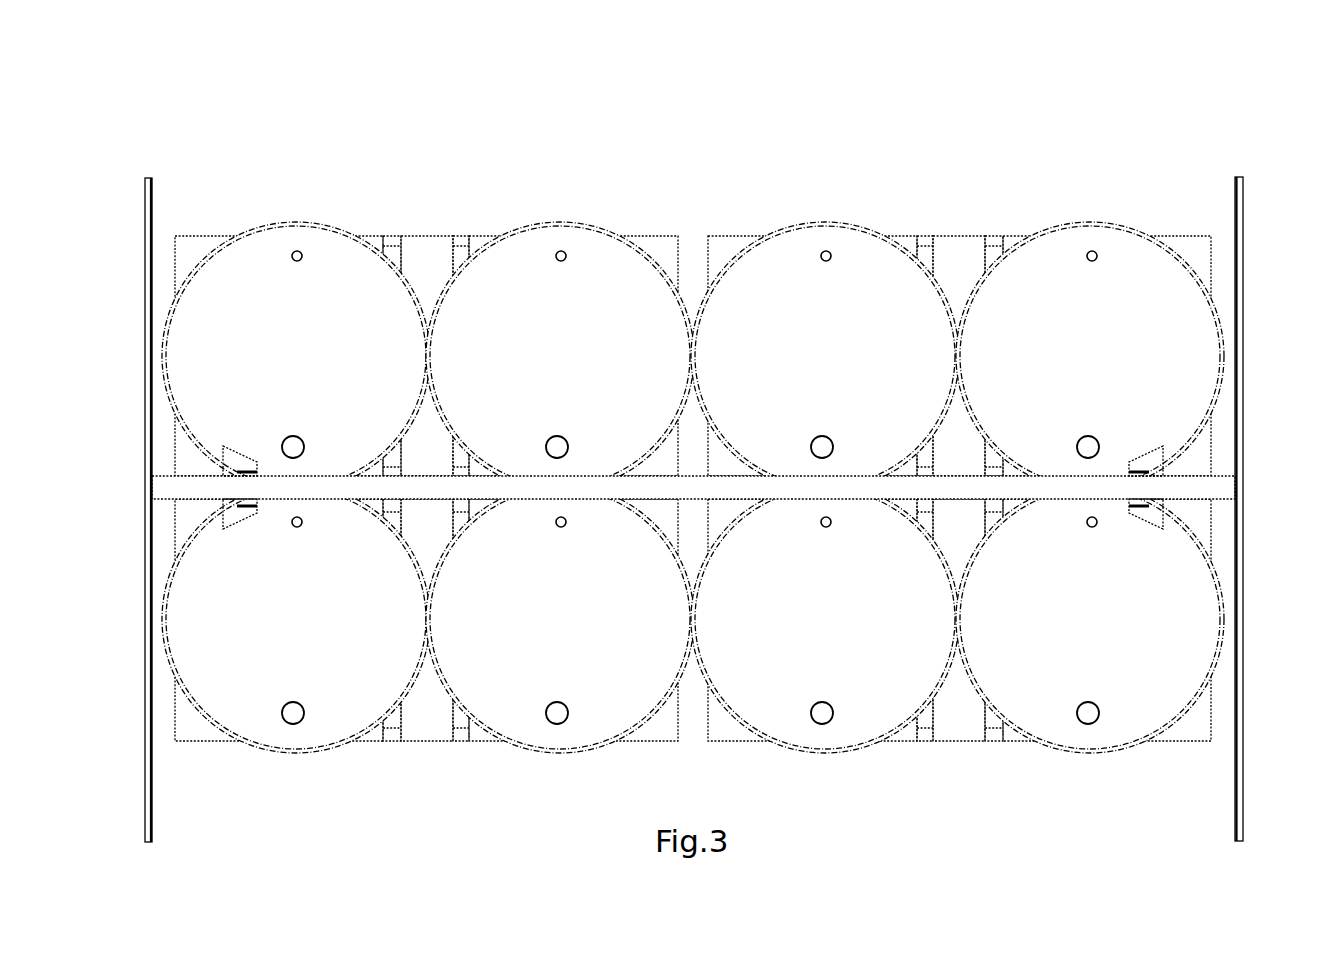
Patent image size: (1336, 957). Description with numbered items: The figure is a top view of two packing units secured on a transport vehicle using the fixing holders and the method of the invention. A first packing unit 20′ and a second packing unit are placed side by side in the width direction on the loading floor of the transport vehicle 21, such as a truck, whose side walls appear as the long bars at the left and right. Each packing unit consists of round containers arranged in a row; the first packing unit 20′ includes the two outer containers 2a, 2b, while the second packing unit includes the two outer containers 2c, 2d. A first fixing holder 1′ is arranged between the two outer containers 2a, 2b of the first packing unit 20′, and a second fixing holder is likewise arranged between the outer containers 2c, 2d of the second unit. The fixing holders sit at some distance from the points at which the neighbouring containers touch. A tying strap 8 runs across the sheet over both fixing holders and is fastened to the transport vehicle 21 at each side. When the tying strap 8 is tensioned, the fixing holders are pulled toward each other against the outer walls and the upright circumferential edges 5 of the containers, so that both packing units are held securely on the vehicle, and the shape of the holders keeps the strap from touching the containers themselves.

The outer container 2a is at (1133, 267).
The outer container 2b is at (1135, 703).
The outer container 2c is at (255, 260).
The outer container 2d is at (247, 705).
The upright circumferential edge 5 is at (1223, 347).
The tying strap 8 is at (1227, 487).
The first fixing holder 1′ is at (1155, 461).
The first packing unit 20′ is at (1099, 177).
The transport vehicle 21 is at (145, 575).